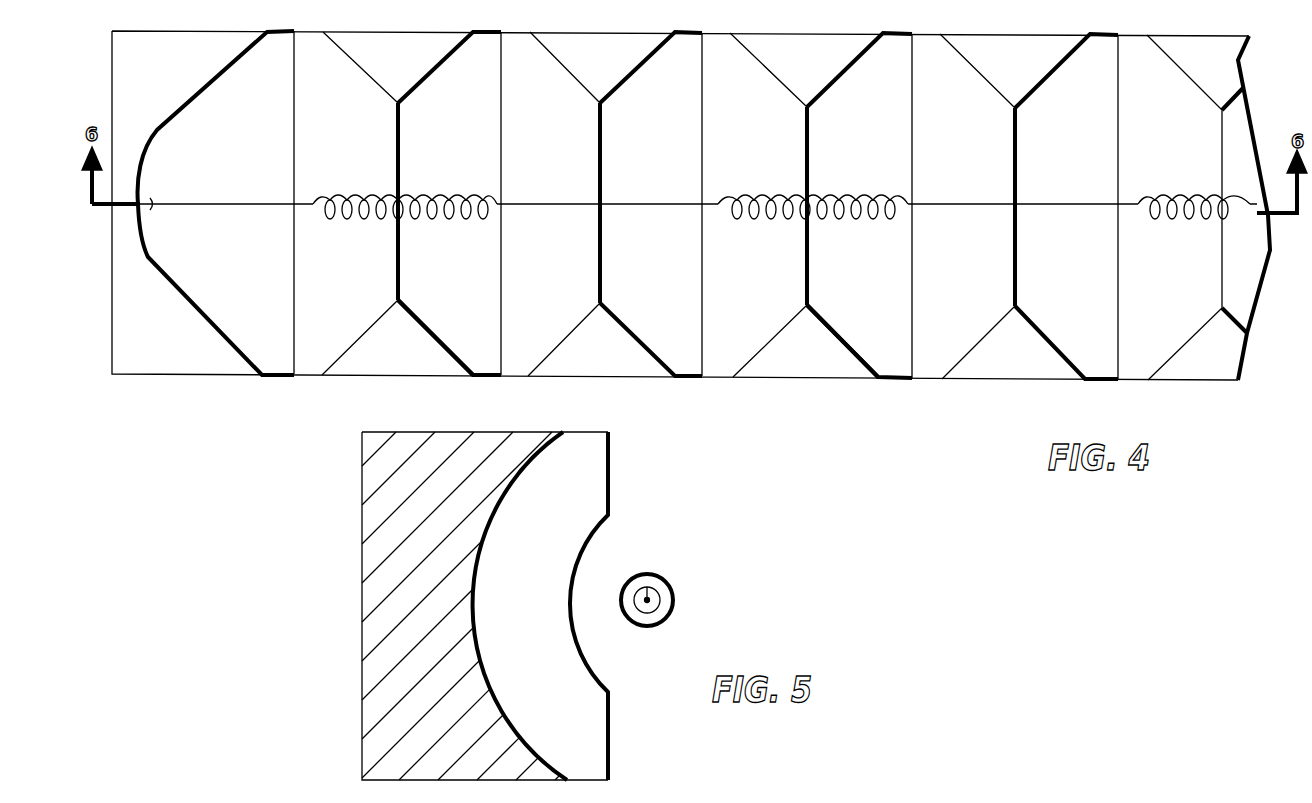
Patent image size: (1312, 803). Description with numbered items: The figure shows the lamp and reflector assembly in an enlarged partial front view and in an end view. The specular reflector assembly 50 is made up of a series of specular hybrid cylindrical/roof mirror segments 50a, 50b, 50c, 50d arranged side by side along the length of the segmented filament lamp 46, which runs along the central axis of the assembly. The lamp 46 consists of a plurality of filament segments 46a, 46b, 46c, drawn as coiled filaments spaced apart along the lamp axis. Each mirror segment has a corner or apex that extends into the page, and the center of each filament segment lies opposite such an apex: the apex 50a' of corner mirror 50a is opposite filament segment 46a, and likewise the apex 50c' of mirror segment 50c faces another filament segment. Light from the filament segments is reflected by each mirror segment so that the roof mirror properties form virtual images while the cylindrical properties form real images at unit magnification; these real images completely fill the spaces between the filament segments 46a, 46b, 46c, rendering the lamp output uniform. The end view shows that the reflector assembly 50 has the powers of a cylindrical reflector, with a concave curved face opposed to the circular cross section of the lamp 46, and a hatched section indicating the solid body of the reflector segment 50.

In FIG. 4, the segmented filament lamp 46 is at (198, 204).
In FIG. 5, the segmented filament lamp 46 is at (662, 577).
In FIG. 4, the filament segment 46a is at (443, 197).
In FIG. 4, the filament segment 46b is at (850, 197).
In FIG. 4, the filament segment 46c is at (1160, 216).
In FIG. 4, the specular reflector assembly 50 is at (235, 352).
In FIG. 5, the specular reflector assembly 50 is at (498, 702).
In FIG. 4, the corner mirror segment 50a is at (411, 225).
In FIG. 4, the apex of corner mirror 50a' is at (435, 344).
In FIG. 4, the mirror segment 50b is at (593, 338).
In FIG. 4, the mirror segment 50c is at (821, 227).
In FIG. 4, the apex of mirror segment 50c' is at (842, 345).
In FIG. 4, the mirror segment 50d is at (1007, 337).